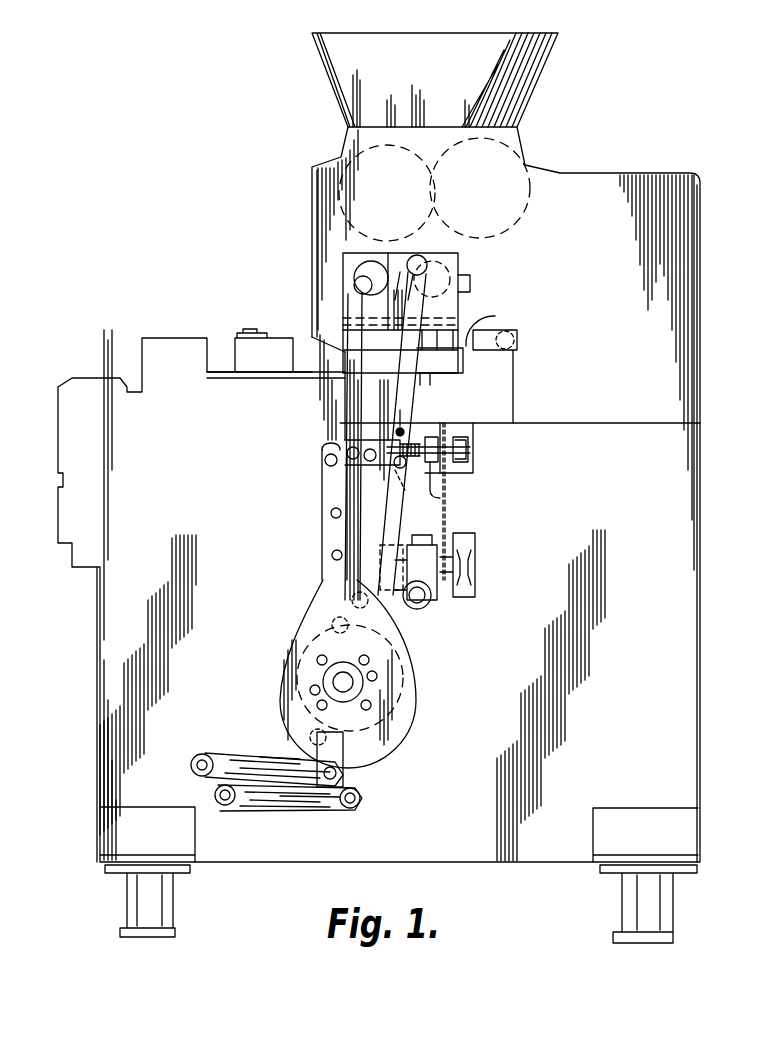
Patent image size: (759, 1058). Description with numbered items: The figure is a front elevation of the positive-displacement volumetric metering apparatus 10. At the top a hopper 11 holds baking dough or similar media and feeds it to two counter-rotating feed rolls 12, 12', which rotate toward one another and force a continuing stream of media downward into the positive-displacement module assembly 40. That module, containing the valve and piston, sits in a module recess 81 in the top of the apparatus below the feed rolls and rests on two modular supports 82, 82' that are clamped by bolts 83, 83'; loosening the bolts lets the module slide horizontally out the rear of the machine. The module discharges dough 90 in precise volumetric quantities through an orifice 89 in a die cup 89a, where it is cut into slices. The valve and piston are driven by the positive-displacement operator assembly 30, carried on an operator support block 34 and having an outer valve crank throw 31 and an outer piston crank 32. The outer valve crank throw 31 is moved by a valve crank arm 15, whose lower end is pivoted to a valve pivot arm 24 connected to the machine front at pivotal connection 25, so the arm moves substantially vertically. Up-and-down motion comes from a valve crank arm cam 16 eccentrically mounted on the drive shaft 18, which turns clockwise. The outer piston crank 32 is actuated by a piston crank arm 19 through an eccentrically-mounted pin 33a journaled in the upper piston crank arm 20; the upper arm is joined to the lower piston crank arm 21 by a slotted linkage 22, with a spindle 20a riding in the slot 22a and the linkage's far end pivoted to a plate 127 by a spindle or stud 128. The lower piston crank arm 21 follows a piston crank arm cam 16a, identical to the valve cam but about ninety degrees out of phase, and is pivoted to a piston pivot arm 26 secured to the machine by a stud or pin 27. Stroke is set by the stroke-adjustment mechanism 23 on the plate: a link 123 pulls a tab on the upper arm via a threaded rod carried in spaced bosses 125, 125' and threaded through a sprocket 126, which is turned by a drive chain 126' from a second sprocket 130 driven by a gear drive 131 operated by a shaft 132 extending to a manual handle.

The metering apparatus 10 is at (612, 140).
The hopper 11 is at (330, 57).
The feed roll 12 is at (349, 170).
The feed roll 12' is at (500, 171).
The valve crank arm 15 is at (403, 410).
The valve crank arm cam 16 is at (410, 637).
The piston crank arm cam 16a is at (412, 720).
The drive shaft 18 is at (343, 680).
The piston crank arm 19 is at (318, 489).
The upper piston crank arm 20 is at (345, 393).
The spindle 20a is at (342, 442).
The lower piston crank arm 21 is at (322, 523).
The slotted linkage 22 is at (325, 455).
The slot 22a is at (347, 418).
The stroke-adjustment mechanism 23 is at (490, 433).
The valve pivot arm 24 is at (250, 752).
The pivotal connection 25 is at (202, 756).
The piston pivot arm 26 is at (308, 812).
The stud or pin 27 is at (224, 806).
The positive-displacement operator assembly 30 is at (480, 300).
The outer valve crank throw 31 is at (433, 265).
The outer piston crank 32 is at (364, 253).
The eccentrically-mounted pin 33a is at (372, 283).
The operator support block 34 is at (355, 276).
The positive-displacement module assembly 40 is at (482, 282).
The module recess 81 is at (458, 300).
The modular support 82 is at (316, 444).
The modular support 82' is at (498, 325).
The bolts 83 is at (349, 433).
The connecting rod end 83' is at (512, 376).
The orifice 89 is at (436, 380).
The die cup 89a is at (455, 366).
The dough 90 is at (422, 378).
The link 123 is at (400, 488).
The spaced bosses 125 is at (440, 474).
The collar 125' is at (485, 457).
The sprocket 126 is at (497, 433).
The drive chain 126' is at (487, 501).
The plate 127 is at (470, 478).
The spindle or stud 128 is at (332, 500).
The second sprocket 130 is at (478, 575).
The gear drive 131 is at (437, 598).
The shaft 132 is at (428, 605).